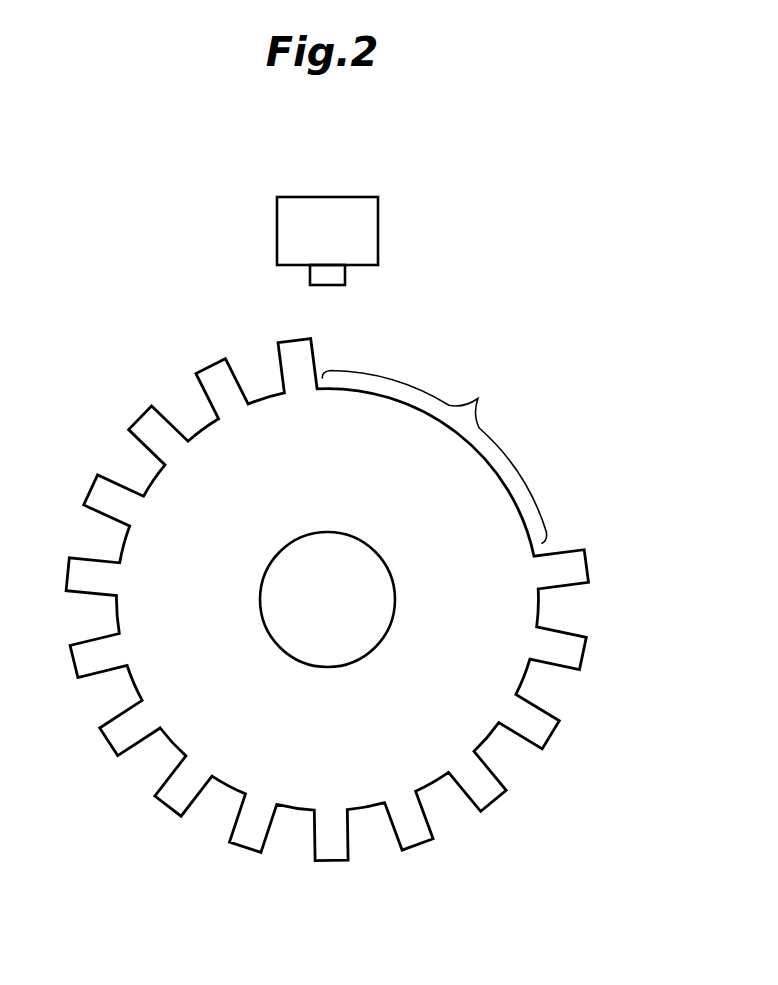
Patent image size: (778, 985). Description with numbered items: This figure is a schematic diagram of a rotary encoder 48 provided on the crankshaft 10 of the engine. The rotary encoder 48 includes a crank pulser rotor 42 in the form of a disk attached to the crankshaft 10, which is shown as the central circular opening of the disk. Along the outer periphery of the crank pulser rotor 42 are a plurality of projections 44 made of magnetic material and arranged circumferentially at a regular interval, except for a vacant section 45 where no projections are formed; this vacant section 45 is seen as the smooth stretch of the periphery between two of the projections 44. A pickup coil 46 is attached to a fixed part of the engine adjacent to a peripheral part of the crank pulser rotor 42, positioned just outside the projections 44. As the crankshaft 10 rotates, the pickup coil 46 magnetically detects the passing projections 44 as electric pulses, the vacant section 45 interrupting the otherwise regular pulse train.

The crankshaft 10 is at (362, 563).
The crank pulser rotor 42 is at (361, 571).
The projections 44 is at (295, 348).
The vacant section 45 is at (434, 456).
The pickup coil 46 is at (332, 278).
The rotary encoder 48 is at (481, 279).